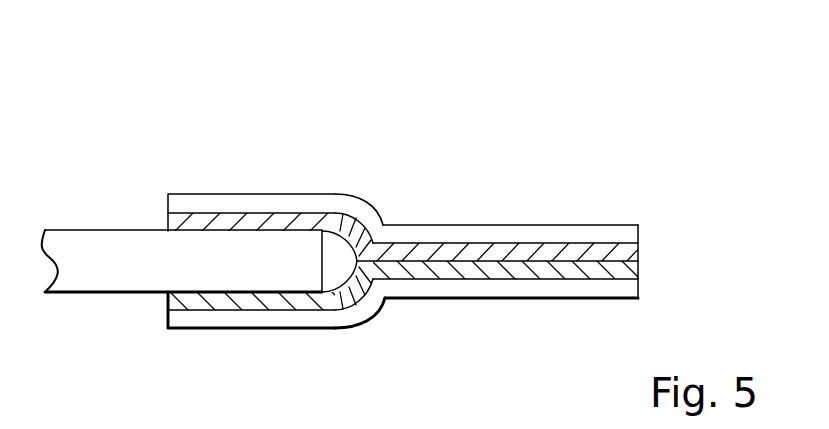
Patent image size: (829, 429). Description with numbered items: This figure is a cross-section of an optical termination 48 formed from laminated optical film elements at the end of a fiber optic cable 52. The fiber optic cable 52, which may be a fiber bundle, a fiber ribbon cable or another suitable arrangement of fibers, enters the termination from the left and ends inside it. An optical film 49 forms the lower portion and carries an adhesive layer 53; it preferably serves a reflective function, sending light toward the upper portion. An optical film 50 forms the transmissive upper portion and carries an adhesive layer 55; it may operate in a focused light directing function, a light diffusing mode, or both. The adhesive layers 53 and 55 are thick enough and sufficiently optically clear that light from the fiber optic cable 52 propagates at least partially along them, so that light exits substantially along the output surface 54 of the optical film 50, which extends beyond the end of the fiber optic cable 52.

The optical termination 48 is at (357, 103).
The optical film 49 is at (392, 288).
The optical film 50 is at (215, 200).
The fiber optic cable 52 is at (114, 240).
The adhesive layer 53 is at (448, 272).
The output surface 54 is at (633, 177).
The adhesive layer 55 is at (593, 250).